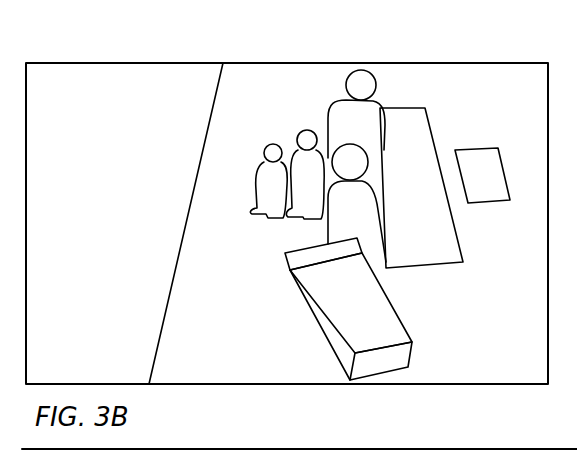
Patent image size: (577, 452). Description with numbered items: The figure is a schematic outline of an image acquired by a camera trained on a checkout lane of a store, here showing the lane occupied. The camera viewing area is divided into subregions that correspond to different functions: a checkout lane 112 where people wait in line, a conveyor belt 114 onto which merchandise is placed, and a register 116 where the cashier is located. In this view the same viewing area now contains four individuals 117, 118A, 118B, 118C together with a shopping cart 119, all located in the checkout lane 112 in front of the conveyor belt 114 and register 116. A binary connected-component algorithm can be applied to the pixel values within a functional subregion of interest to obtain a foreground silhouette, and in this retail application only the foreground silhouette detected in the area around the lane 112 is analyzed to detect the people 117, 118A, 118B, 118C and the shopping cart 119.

The checkout lane 112 is at (212, 279).
The conveyor belt 114 is at (416, 130).
The register 116 is at (468, 164).
The individual 117 is at (357, 218).
The individual 118A is at (273, 150).
The individual 118B is at (304, 142).
The individual 118C is at (360, 82).
The shopping cart 119 is at (380, 367).